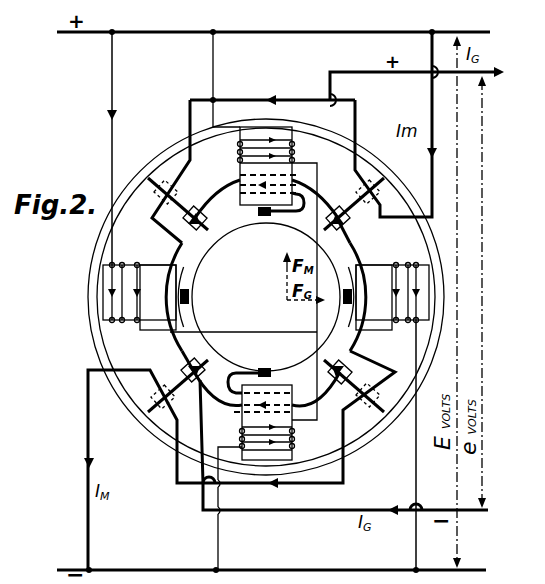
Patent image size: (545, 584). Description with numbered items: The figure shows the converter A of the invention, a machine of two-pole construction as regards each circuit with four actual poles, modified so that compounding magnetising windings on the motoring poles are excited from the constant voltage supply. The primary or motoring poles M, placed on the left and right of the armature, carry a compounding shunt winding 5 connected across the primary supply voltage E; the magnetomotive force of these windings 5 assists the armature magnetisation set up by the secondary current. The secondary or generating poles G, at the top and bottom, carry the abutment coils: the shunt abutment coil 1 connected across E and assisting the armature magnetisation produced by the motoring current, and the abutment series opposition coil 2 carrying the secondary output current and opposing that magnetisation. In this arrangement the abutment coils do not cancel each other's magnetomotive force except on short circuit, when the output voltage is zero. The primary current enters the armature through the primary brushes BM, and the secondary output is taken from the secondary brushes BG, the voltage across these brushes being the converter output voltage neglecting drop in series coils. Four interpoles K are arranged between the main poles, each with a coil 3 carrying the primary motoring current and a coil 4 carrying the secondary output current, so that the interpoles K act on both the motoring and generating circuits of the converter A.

The shunt abutment coil 1 is at (302, 148).
The abutment series opposition coil 2 is at (306, 176).
The interpole coil 3 is at (269, 296).
The interpole coil 4 is at (270, 296).
The compounding shunt winding 5 is at (264, 283).
The interpoles K is at (206, 228).
The primary or motoring poles M is at (266, 297).
The secondary or generating poles G is at (266, 293).
The converter A is at (266, 297).
The secondary brushes BG is at (263, 294).
The primary brushes BM is at (266, 292).